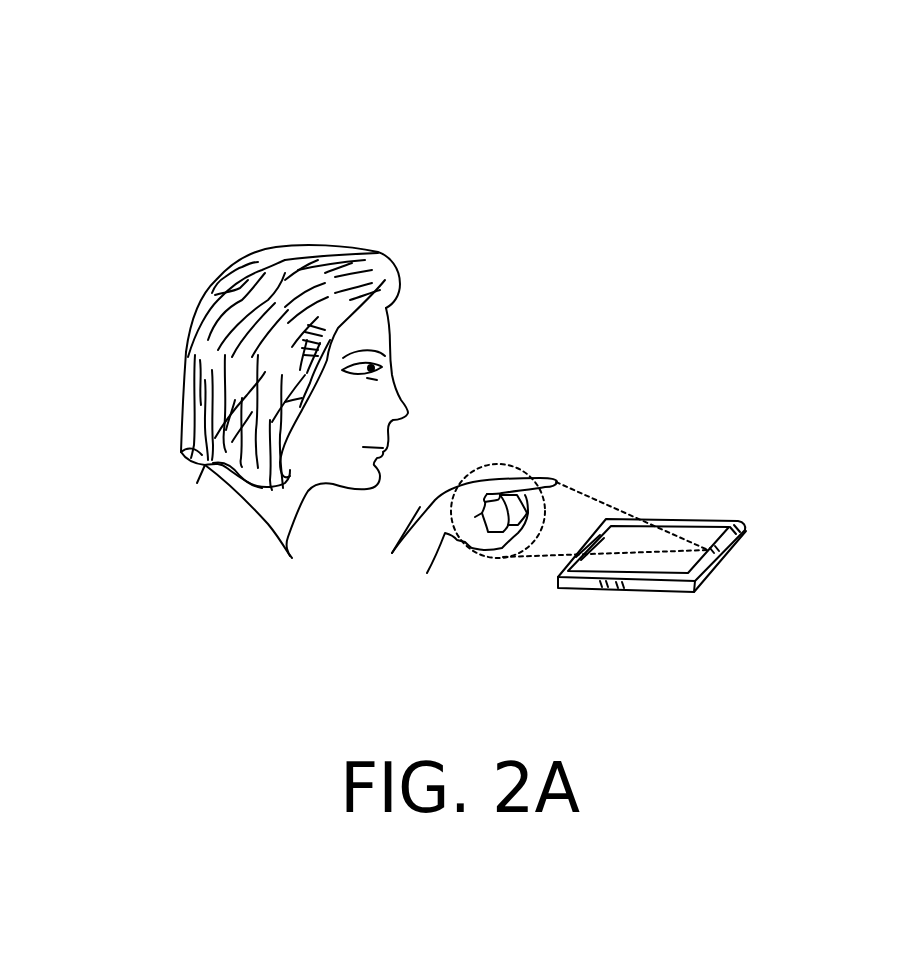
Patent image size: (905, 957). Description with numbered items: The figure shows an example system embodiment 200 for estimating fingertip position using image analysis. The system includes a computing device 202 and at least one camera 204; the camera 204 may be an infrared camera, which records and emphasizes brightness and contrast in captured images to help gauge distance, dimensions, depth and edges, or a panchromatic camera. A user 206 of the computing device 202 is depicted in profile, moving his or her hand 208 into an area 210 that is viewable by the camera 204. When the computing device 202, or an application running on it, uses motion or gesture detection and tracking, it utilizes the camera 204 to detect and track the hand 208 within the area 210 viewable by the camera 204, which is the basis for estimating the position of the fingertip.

The system embodiment 200 is at (781, 124).
The computing device 202 is at (656, 592).
The camera 204 is at (723, 547).
The user 206 is at (181, 255).
The hand 208 is at (435, 485).
The area 210 is at (517, 470).